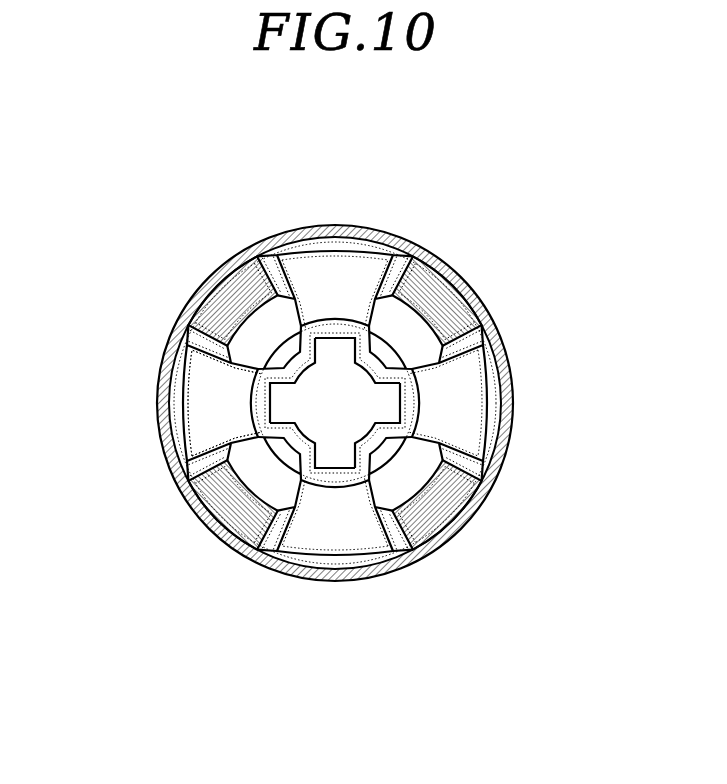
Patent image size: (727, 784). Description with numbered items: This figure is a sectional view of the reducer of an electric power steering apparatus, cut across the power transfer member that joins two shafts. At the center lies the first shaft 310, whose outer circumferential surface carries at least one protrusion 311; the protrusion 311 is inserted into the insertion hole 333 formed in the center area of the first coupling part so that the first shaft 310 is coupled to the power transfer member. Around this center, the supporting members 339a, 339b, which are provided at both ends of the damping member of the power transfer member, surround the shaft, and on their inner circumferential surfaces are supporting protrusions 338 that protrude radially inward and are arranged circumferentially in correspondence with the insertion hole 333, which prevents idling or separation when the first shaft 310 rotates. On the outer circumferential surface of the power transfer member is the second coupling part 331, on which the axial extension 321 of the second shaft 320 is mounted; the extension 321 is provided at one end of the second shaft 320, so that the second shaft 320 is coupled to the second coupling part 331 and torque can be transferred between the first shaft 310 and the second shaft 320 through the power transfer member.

The second shaft 320 is at (368, 228).
The axial extension 321 is at (438, 302).
The second coupling part 331 is at (262, 318).
The first shaft 310 is at (408, 482).
The supporting protrusion 338 is at (270, 460).
The supporting member 339a is at (205, 400).
The supporting member 339b is at (205, 400).
The insertion hole 333 is at (336, 402).
The protrusion 311 is at (328, 458).